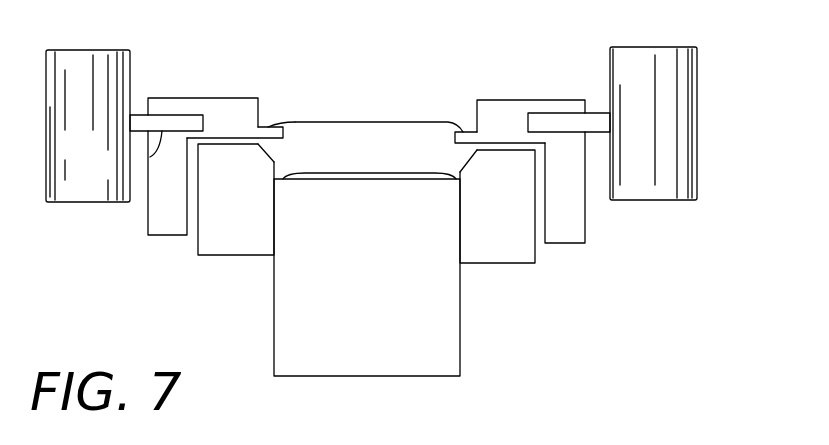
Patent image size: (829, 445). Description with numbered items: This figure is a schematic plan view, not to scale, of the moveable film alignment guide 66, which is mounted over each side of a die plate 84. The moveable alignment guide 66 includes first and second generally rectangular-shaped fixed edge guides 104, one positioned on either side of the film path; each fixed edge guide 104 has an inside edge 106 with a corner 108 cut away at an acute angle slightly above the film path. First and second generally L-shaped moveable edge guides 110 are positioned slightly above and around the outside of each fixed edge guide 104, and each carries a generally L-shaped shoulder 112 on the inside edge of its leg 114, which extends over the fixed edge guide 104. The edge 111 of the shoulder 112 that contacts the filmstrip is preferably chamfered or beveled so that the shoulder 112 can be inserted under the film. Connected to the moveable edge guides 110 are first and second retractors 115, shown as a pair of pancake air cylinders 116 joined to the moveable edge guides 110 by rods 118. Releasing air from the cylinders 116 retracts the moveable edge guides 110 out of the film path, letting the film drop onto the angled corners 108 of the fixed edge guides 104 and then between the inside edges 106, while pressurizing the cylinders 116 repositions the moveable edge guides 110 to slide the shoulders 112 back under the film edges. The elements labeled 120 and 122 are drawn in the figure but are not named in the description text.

The moveable film alignment guide 66 is at (626, 282).
The die plate 84 is at (460, 327).
The fixed edge guide 104 is at (232, 243).
The inside edge 106 is at (276, 166).
The corner 108 is at (460, 160).
The moveable edge guide 110 is at (168, 228).
The edge 111 is at (293, 127).
The shoulder 112 is at (265, 127).
The leg 114 is at (220, 65).
The retractor 115 is at (148, 58).
The pancake air cylinder 116 is at (58, 121).
The rod 118 is at (142, 157).
The membrane 120 is at (357, 122).
The lens shaped cavity 122 is at (375, 173).